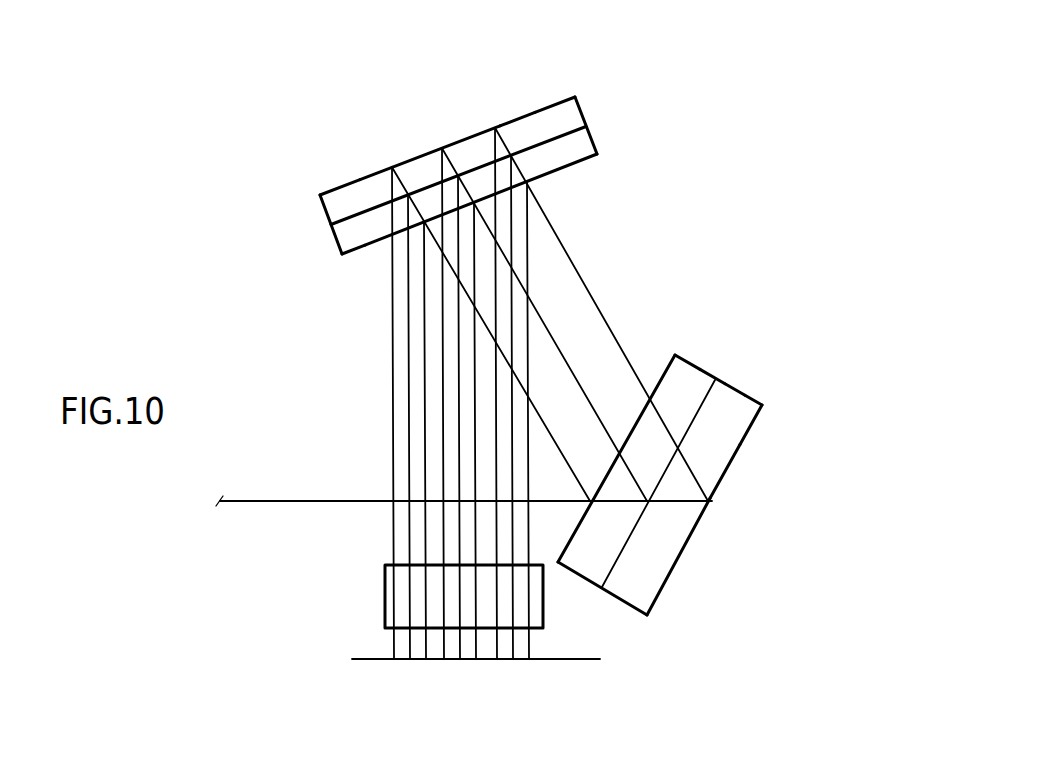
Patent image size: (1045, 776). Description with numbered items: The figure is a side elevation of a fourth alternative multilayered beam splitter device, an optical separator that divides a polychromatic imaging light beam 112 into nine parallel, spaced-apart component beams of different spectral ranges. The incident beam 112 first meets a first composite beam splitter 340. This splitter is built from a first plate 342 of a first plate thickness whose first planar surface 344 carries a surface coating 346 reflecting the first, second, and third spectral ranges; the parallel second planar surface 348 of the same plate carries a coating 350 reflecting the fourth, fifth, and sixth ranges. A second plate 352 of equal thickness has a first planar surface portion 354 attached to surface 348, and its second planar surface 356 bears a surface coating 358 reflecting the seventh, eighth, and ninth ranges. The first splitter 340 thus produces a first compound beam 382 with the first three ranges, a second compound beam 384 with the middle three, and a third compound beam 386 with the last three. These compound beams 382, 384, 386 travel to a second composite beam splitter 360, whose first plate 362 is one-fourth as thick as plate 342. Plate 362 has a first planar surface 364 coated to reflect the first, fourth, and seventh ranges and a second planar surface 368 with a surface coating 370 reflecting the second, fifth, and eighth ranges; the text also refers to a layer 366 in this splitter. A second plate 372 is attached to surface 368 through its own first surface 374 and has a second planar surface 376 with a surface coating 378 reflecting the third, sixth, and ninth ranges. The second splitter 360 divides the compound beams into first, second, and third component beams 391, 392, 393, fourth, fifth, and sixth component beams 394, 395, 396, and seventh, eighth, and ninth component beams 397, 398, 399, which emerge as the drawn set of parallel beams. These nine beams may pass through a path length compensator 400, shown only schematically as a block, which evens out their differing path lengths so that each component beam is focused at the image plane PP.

The polychromatic imaging light beam 112 is at (293, 500).
The first composite beam splitter 340 is at (842, 378).
The first plate 342 is at (686, 368).
The first planar surface 344 is at (656, 382).
The surface coating 346 is at (662, 368).
The second planar surface 348 is at (710, 378).
The coating 350 is at (692, 413).
The second plate 352 is at (738, 410).
The first planar surface portion 354 is at (628, 573).
The second planar surface 356 is at (740, 452).
The surface coating 358 is at (722, 485).
The second composite beam splitter 360 is at (600, 106).
The first plate 362 is at (587, 127).
The first planar surface 364 is at (590, 150).
The beam splitter plate 366 is at (567, 168).
The second planar surface 368 is at (541, 148).
The surface coating 370 is at (518, 124).
The second plate 372 is at (331, 214).
The beam splitter surface 374 is at (341, 240).
The second planar surface 376 is at (336, 187).
The surface coating 378 is at (365, 176).
The first compound beam 382 is at (572, 413).
The second compound beam 384 is at (580, 318).
The third compound beam 386 is at (572, 257).
The first component beam 391 is at (404, 660).
The second component beam 392 is at (396, 660).
The third component beam 393 is at (397, 646).
The fourth component beam 394 is at (485, 660).
The fifth component beam 395 is at (465, 660).
The sixth component beam 396 is at (425, 660).
The seventh component beam 397 is at (552, 660).
The eighth component beam 398 is at (520, 660).
The ninth component beam 399 is at (503, 660).
The path length compensator 400 is at (375, 597).
The image plane PP is at (600, 659).